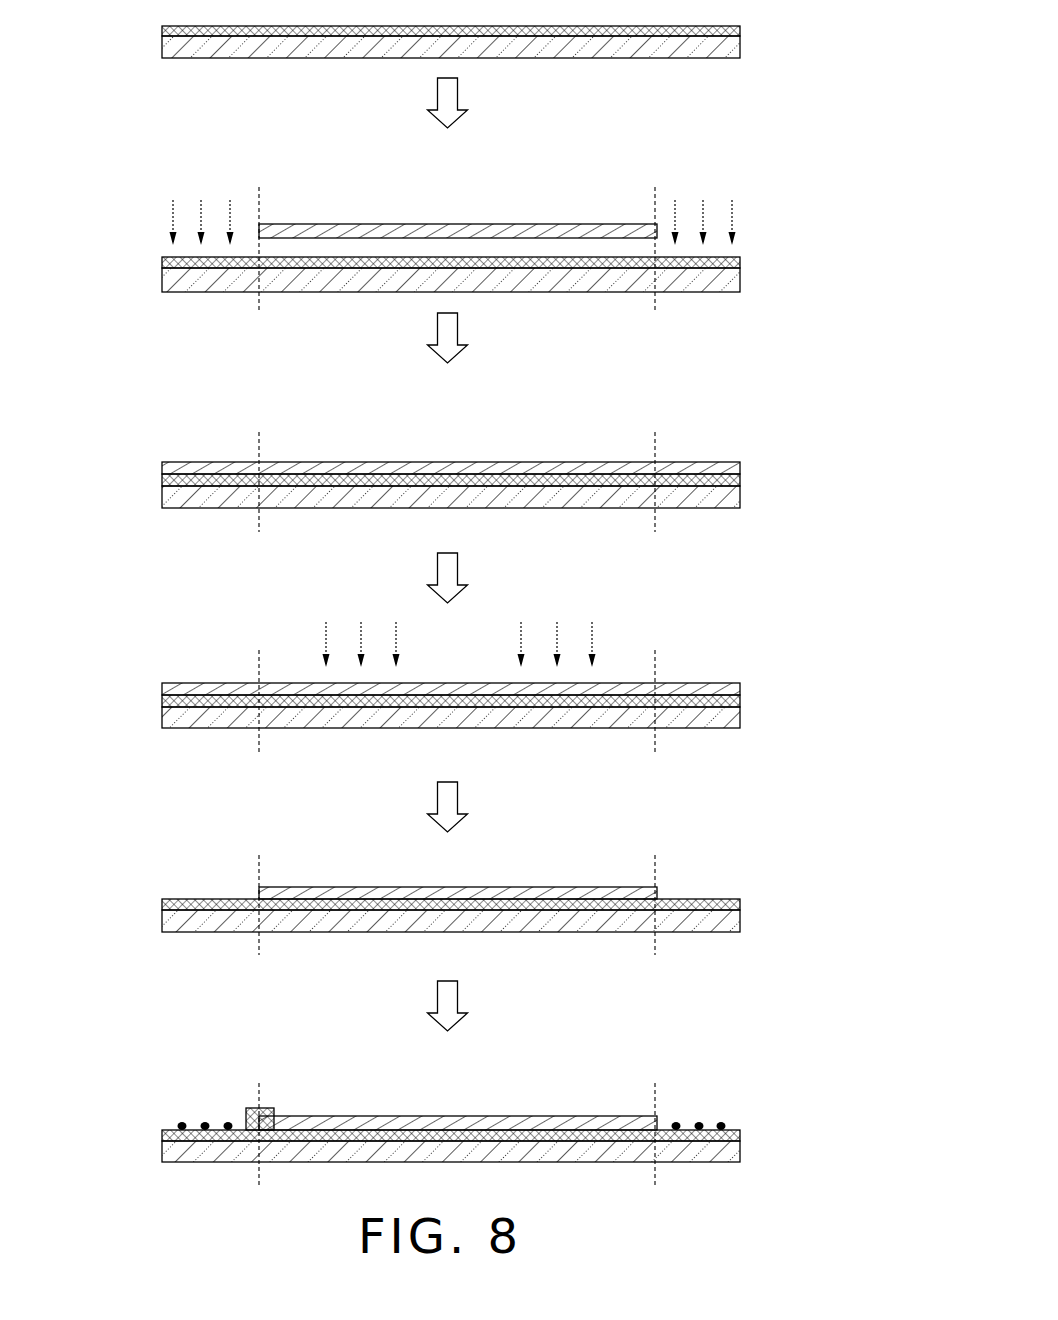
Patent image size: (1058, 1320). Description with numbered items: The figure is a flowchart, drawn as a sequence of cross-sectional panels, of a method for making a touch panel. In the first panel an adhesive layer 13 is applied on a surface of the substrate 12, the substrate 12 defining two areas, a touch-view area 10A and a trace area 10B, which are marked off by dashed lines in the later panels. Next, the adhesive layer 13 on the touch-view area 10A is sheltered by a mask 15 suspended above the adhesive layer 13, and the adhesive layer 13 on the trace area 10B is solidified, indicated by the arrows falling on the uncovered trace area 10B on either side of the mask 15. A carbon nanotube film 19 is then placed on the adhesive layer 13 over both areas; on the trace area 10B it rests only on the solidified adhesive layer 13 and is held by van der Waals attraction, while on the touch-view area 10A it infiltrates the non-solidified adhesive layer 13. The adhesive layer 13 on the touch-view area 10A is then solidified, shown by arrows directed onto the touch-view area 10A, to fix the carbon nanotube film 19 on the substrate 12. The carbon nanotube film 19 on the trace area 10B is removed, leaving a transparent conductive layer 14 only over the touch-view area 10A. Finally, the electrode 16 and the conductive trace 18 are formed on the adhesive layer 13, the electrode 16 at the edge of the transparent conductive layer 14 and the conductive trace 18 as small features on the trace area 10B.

The substrate 12 is at (715, 50).
The adhesive layer 13 is at (740, 27).
The transparent conductive layer 14 is at (580, 888).
The mask 15 is at (563, 224).
The electrode 16 is at (245, 1113).
The conductive trace 18 is at (180, 1122).
The carbon nanotube film 19 is at (740, 464).
The touch-view area 10A is at (372, 677).
The trace area 10B is at (697, 677).